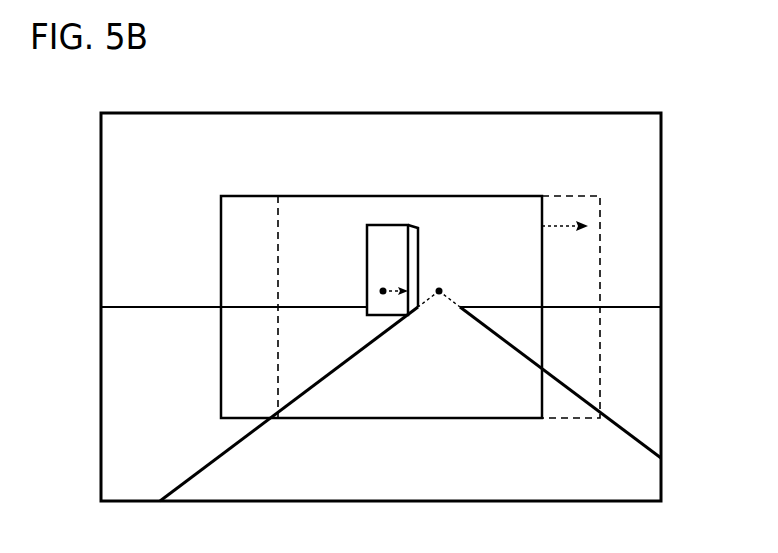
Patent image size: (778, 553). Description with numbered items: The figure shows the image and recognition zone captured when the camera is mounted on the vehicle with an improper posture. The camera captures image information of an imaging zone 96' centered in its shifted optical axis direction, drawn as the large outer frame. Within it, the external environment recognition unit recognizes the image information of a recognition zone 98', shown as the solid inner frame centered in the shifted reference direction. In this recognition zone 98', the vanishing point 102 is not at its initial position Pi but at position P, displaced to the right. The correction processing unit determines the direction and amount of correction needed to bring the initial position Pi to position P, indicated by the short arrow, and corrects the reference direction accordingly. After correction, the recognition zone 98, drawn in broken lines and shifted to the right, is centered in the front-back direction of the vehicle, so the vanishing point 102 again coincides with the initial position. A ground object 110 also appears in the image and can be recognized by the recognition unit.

The imaging zone 96' is at (381, 279).
The recognition zone 98' is at (381, 284).
The recognition zone 98 is at (578, 284).
The ground object 110 is at (388, 225).
The vanishing point 102 is at (440, 287).